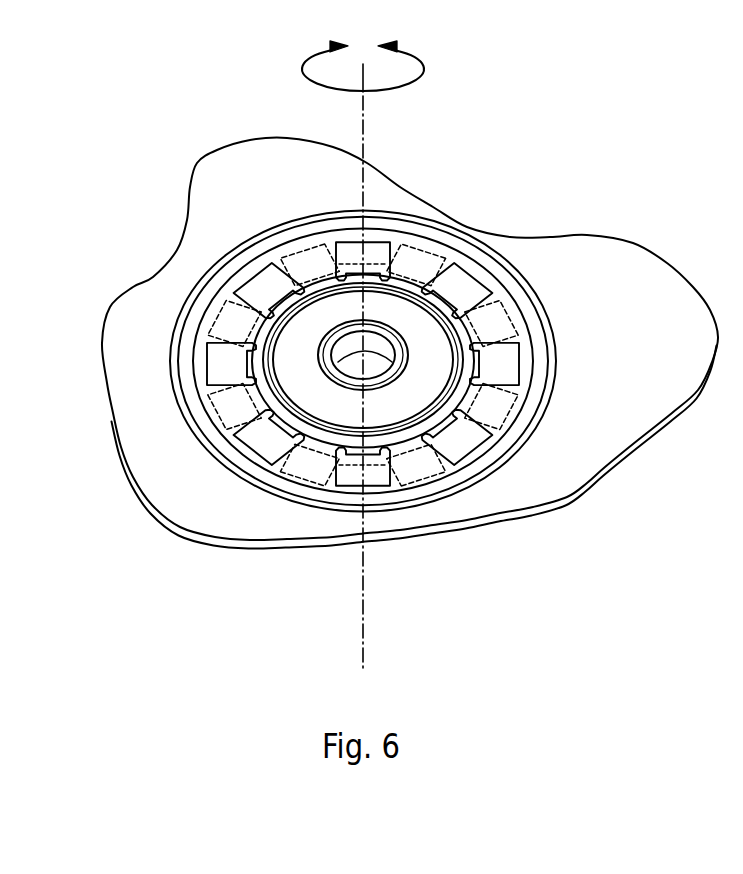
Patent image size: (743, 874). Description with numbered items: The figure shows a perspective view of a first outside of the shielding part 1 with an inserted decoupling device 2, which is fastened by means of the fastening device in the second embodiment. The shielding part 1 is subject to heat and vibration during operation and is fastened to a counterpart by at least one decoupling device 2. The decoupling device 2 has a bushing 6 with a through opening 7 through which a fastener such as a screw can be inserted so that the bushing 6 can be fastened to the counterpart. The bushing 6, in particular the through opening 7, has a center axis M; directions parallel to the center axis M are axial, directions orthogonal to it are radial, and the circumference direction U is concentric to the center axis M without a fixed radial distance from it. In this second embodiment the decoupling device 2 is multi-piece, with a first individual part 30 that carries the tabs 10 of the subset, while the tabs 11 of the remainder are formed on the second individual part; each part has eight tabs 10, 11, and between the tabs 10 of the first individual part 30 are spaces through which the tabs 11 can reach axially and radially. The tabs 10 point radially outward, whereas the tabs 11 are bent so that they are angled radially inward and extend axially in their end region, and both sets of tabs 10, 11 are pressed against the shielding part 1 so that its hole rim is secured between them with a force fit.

The shielding part 1 is at (663, 283).
The decoupling device 2 is at (300, 356).
The bushing 6 is at (330, 308).
The through opening 7 is at (352, 367).
The tabs 10 is at (470, 287).
The tabs 11 is at (428, 253).
The first individual part 30 is at (445, 418).
The circumference direction U is at (425, 68).
The center axis M is at (363, 634).